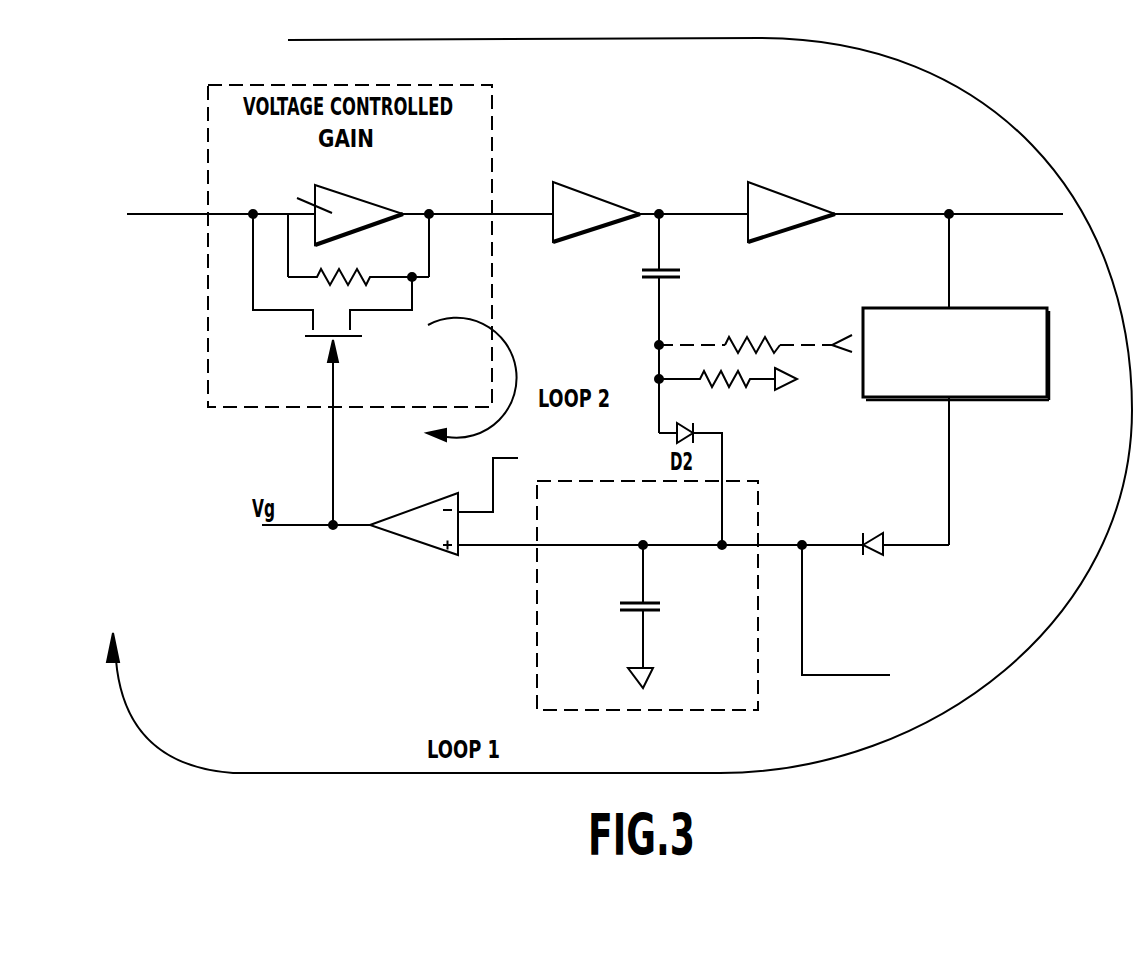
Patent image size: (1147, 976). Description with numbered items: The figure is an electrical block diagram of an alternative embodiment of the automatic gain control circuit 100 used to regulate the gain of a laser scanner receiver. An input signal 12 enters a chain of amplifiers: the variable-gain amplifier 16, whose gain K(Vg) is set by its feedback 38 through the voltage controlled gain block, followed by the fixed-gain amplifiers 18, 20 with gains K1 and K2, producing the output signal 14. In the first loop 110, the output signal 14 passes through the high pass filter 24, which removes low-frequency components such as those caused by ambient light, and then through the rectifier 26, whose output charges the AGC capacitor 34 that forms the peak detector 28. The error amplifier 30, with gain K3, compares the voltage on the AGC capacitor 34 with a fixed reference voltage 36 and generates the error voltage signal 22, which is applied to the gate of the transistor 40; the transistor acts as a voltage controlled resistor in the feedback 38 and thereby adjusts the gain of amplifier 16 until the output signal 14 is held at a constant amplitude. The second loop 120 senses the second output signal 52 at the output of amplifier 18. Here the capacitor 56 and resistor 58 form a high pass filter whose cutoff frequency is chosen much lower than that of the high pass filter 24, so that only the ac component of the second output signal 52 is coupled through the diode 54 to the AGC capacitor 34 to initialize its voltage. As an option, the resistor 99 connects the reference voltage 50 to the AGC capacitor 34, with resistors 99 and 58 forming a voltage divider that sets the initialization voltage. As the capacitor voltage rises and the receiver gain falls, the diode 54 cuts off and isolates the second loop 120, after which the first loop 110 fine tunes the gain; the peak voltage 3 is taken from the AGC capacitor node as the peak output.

The input signal 12 is at (180, 220).
The output signal 14 is at (977, 213).
The amplifier 16 is at (343, 192).
The amplifier 18 is at (580, 190).
The amplifier 20 is at (768, 187).
The error voltage signal 22 is at (332, 440).
The high pass filter 24 is at (1048, 347).
The rectifier 26 is at (885, 556).
The peak detector 28 is at (760, 517).
The error amplifier 30 is at (427, 543).
The AGC capacitor 34 is at (650, 615).
The reference voltage 36 is at (518, 460).
The feedback 38 is at (435, 242).
The transistor 40 is at (350, 340).
The reference voltage 50 is at (797, 342).
The second output signal 52 is at (660, 243).
The diode 54 is at (697, 425).
The capacitor 56 is at (652, 277).
The resistor 58 is at (728, 385).
The resistor 99 is at (730, 350).
The automatic gain control circuit 100 is at (310, 610).
The first loop 110 is at (1078, 603).
The second loop 120 is at (517, 363).
The peak output terminal VOUT (PEAK) 3 is at (817, 675).